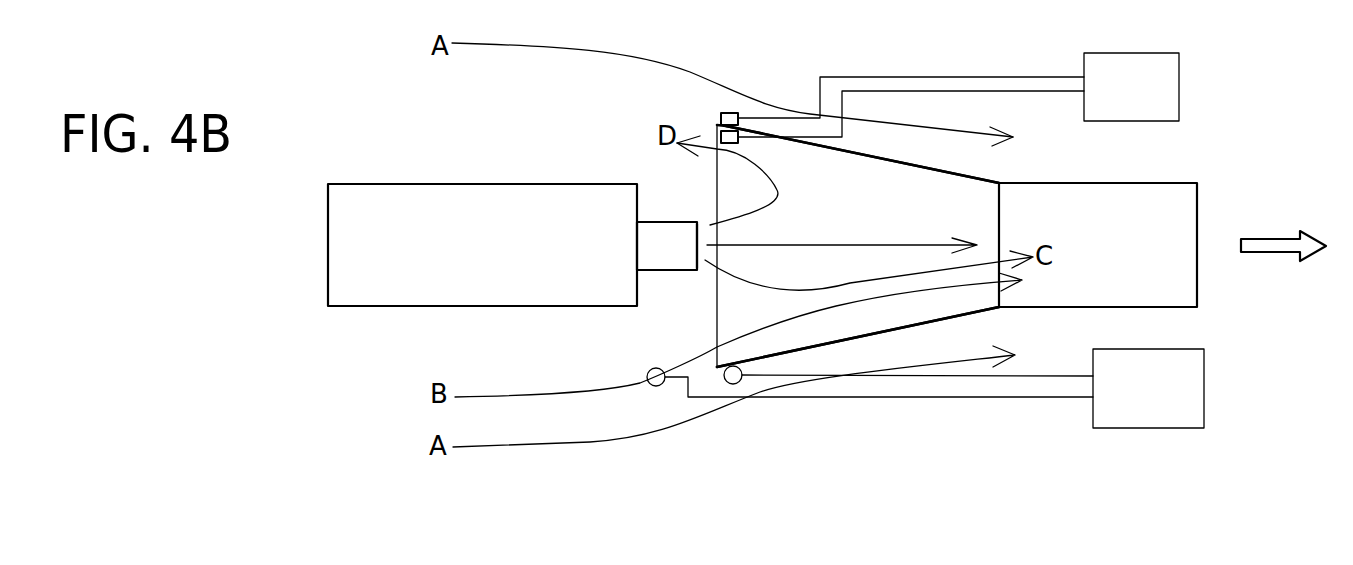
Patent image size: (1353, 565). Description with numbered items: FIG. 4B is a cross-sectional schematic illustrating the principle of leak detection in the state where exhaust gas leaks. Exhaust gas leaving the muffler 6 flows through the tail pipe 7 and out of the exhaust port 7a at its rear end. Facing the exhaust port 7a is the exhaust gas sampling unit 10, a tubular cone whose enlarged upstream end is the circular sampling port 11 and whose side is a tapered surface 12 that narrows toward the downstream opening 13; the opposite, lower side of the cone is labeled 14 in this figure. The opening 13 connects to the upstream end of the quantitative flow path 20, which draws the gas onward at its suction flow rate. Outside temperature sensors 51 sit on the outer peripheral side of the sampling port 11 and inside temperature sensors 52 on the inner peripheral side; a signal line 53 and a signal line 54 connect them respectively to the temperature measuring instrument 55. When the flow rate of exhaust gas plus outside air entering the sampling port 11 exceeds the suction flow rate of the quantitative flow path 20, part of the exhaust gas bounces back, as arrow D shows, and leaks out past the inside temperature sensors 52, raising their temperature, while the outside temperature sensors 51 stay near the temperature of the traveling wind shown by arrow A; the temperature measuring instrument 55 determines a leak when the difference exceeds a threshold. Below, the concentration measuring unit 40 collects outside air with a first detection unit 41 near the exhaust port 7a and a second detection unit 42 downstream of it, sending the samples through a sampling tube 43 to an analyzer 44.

The muffler 6 is at (431, 184).
The tail pipe 7 is at (658, 270).
The exhaust port 7a is at (700, 223).
The exhaust gas sampling unit 10 is at (913, 160).
The sampling port 11 is at (735, 300).
The tapered surface 12 is at (888, 157).
The opening 13 is at (1018, 200).
The nozzle lower wall 14 is at (717, 330).
The quantitative flow path 20 is at (1179, 200).
The concentration measuring unit 40 is at (889, 422).
The first detection unit 41 is at (733, 384).
The second detection unit 42 is at (656, 386).
The sampling tube 43 is at (1038, 398).
The analyzer 44 is at (1204, 398).
The outside temperature sensor 51 is at (723, 112).
The inside temperature sensor 52 is at (732, 143).
The signal line 53 is at (955, 76).
The signal line 54 is at (1022, 90).
The temperature measuring instrument 55 is at (1179, 67).